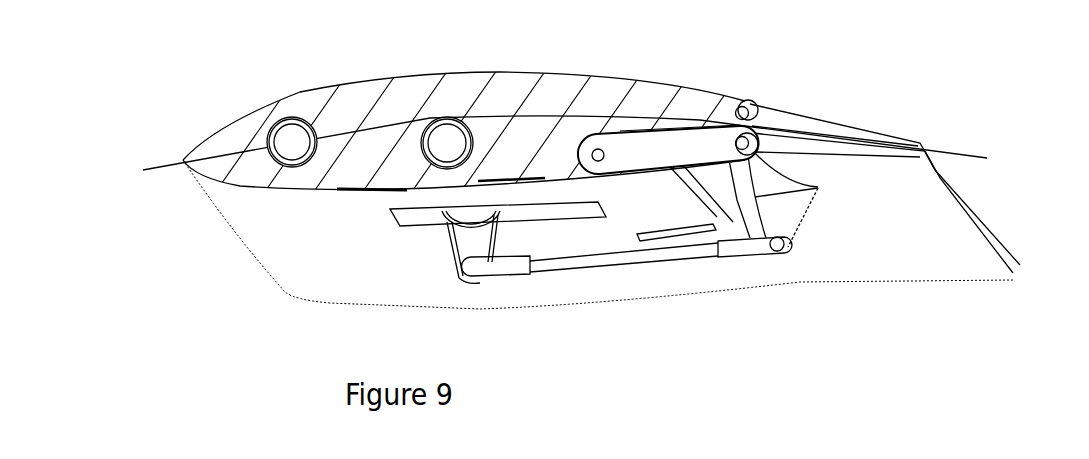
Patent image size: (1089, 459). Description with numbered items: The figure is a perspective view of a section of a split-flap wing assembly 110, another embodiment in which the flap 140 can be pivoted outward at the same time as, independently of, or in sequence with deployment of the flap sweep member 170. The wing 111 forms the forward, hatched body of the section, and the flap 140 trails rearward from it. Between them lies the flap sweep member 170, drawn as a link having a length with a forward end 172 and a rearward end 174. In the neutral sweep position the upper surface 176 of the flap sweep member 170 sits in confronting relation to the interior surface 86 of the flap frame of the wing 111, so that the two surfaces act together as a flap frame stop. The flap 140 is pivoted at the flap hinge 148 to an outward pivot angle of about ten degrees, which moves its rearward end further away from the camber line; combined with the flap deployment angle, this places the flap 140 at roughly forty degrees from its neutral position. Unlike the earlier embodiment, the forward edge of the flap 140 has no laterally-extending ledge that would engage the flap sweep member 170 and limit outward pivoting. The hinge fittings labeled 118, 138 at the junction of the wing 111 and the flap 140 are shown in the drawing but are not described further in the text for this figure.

The split-flap wing assembly 110 is at (605, 183).
The wing 111 is at (377, 102).
The forward end 172 is at (593, 135).
The flap sweep member 170 is at (610, 93).
The upper surface 176 is at (652, 133).
The hinge 118 is at (837, 90).
The pivot axis 138 is at (750, 104).
The flap hinge 148 is at (752, 157).
The interior surface 86 is at (667, 172).
The rearward end 174 is at (791, 245).
The flap 140 is at (895, 303).